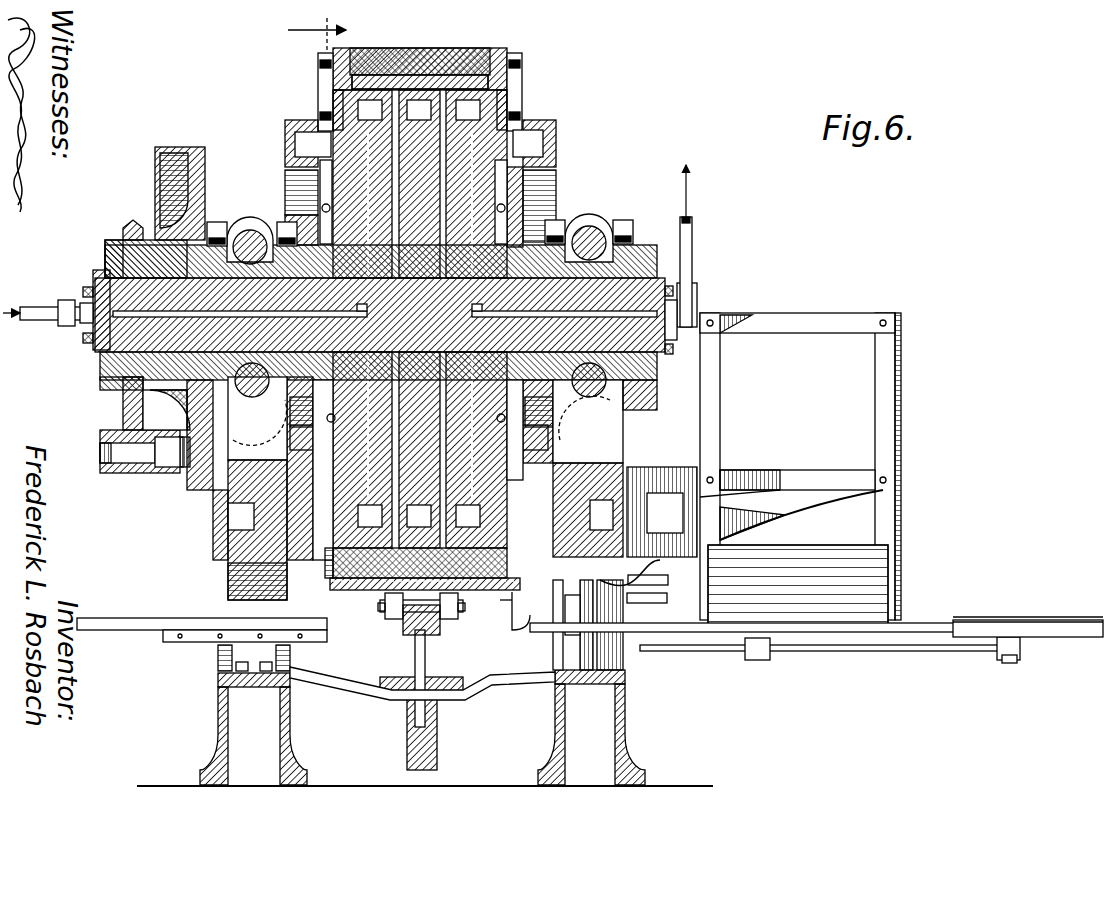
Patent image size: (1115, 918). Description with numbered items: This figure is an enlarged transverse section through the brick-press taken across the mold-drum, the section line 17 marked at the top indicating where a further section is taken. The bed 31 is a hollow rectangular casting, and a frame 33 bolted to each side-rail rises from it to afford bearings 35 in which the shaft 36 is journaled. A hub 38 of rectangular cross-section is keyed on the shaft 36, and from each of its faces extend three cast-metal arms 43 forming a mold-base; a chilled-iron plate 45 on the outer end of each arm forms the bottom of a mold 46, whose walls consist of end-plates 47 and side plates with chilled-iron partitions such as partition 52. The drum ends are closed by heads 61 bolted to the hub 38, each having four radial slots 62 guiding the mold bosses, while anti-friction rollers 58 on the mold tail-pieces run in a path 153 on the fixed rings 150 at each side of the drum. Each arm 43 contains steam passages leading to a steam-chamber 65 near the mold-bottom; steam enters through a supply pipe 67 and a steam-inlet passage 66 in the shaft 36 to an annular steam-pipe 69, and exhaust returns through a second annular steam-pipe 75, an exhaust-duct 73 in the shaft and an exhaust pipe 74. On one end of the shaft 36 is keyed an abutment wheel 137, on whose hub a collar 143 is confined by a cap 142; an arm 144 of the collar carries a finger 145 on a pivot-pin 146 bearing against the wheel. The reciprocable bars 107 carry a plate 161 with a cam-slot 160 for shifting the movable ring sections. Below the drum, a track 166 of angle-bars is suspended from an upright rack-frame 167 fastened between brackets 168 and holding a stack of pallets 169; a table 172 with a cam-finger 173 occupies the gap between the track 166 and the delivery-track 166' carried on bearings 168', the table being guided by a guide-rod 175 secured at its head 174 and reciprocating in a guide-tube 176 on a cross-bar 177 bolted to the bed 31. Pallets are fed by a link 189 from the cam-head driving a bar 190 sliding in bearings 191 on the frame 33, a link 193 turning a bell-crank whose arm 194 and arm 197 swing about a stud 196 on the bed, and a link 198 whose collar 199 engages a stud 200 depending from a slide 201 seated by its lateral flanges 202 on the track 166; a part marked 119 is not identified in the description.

The section line 17 is at (317, 32).
The bed 31 is at (218, 740).
The frame 33 is at (626, 422).
The bearings 35 is at (212, 262).
The shaft 36 is at (94, 340).
The hub 38 is at (380, 315).
The arms 43 is at (500, 130).
The plate 45 is at (467, 84).
The mold 46 is at (393, 50).
The end-plates 47 is at (512, 74).
The partition 52 is at (440, 48).
The anti-friction roller 58 is at (310, 146).
The heads 61 is at (318, 200).
The radial slots 62 is at (325, 95).
The steam-chamber 65 is at (419, 313).
The steam-inlet passage 66 is at (100, 290).
The steam-supply pipe 67 is at (34, 307).
The annular steam-pipe 69 is at (557, 184).
The exhaust-duct 73 is at (659, 356).
The exhaust pipe 74 is at (692, 256).
The annular steam-pipe 75 is at (337, 211).
The bars 107 is at (614, 484).
The nut 119 is at (446, 608).
The abutment wheel 137 is at (185, 150).
The cap 142 is at (110, 246).
The collar 143 is at (133, 222).
The arm 144 is at (120, 404).
The finger 145 is at (170, 470).
The pivot-pin 146 is at (140, 453).
The rings 150 is at (297, 121).
The path 153 is at (300, 150).
The cam-slot 160 is at (571, 458).
The plate 161 is at (282, 487).
The track 166 is at (746, 602).
The delivery-track 166' is at (202, 644).
The rack-frame 167 is at (883, 405).
The brackets 168 is at (797, 464).
The bearings 168' is at (243, 665).
The pallets 169 is at (827, 592).
The table 172 is at (345, 598).
The cam-finger 173 is at (519, 622).
The head 174 is at (400, 612).
The guide-rod 175 is at (426, 650).
The guide-tube 176 is at (438, 723).
The cross-bar 177 is at (355, 697).
The link 189 is at (765, 501).
The bar 190 is at (706, 470).
The bearings 191 is at (745, 510).
The link 193 is at (668, 582).
The arm 194 is at (632, 598).
The stud 196 is at (590, 585).
The arm 197 is at (717, 653).
The link 198 is at (903, 651).
The collar 199 is at (1022, 652).
The stud 200 is at (1005, 663).
The slide 201 is at (1045, 630).
The lateral flanges 202 is at (982, 620).